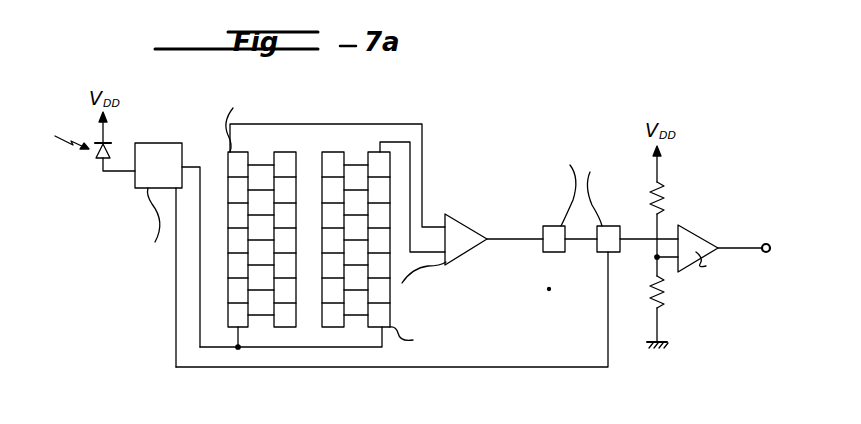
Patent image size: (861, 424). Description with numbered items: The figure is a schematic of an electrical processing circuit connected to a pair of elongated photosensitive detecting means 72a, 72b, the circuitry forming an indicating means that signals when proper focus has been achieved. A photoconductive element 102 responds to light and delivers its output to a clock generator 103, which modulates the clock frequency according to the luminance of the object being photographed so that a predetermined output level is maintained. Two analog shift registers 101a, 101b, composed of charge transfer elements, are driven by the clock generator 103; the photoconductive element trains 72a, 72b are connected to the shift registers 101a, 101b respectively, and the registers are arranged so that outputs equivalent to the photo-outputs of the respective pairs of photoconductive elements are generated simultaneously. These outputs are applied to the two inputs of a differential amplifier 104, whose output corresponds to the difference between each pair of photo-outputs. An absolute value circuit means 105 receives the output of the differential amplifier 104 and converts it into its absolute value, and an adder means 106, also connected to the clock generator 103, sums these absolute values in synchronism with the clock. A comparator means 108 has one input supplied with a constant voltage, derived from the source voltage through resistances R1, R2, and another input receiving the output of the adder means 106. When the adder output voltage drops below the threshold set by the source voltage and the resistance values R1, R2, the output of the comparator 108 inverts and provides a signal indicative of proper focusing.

The analog shift register 101a is at (244, 152).
The analog shift register 101b is at (379, 152).
The photoconductive element 102 is at (96, 160).
The clock generator 103 is at (157, 148).
The differential amplifier 104 is at (466, 224).
The absolute value circuit means 105 is at (549, 231).
The adder means 106 is at (625, 225).
The comparator means 108 is at (698, 238).
The elongated photosensitive detecting means 72a is at (335, 327).
The elongated photosensitive detecting means 72b is at (279, 327).
The resistance R1 is at (670, 186).
The resistance R2 is at (670, 288).